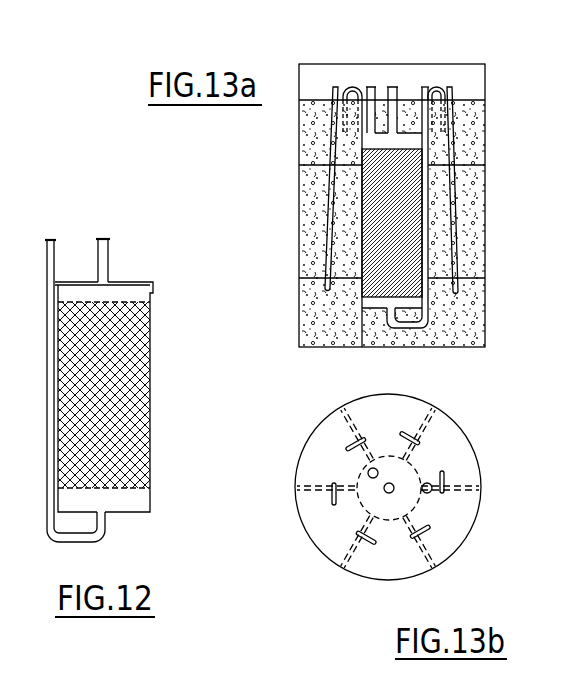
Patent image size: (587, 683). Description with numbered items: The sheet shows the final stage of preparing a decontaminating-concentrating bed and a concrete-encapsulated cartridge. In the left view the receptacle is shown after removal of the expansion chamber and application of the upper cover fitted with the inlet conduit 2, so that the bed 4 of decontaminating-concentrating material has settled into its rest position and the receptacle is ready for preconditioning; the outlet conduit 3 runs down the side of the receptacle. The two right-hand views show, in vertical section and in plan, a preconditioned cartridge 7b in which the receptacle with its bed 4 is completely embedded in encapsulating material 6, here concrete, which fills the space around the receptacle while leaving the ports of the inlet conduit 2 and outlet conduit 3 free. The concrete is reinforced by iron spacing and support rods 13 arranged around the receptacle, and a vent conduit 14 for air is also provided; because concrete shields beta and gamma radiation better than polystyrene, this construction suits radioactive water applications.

In FIG. 12, the inlet conduit 2 is at (97, 250).
In FIG. 13A, the inlet conduit 2 is at (395, 87).
In FIG. 13B, the inlet conduit 2 is at (386, 493).
In FIG. 12, the outlet conduit 3 is at (46, 252).
In FIG. 13A, the outlet conduit 3 is at (428, 87).
In FIG. 13B, the outlet conduit 3 is at (432, 486).
In FIG. 12, the bed of decontaminating-concentrating material 4 is at (145, 351).
In FIG. 13A, the bed of decontaminating-concentrating material 4 is at (373, 240).
In FIG. 13A, the encapsulating material 6 is at (310, 308).
In FIG. 13B, the encapsulating material 6 is at (452, 438).
In FIG. 13A, the preconditioned cartridge 7b is at (284, 135).
In FIG. 13B, the preconditioned cartridge 7b is at (301, 427).
In FIG. 13A, the iron spacing and support rods 13 is at (478, 165).
In FIG. 13B, the iron spacing and support rods 13 is at (355, 416).
In FIG. 13A, the vent conduit for air 14 is at (372, 87).
In FIG. 13B, the vent conduit for air 14 is at (368, 473).